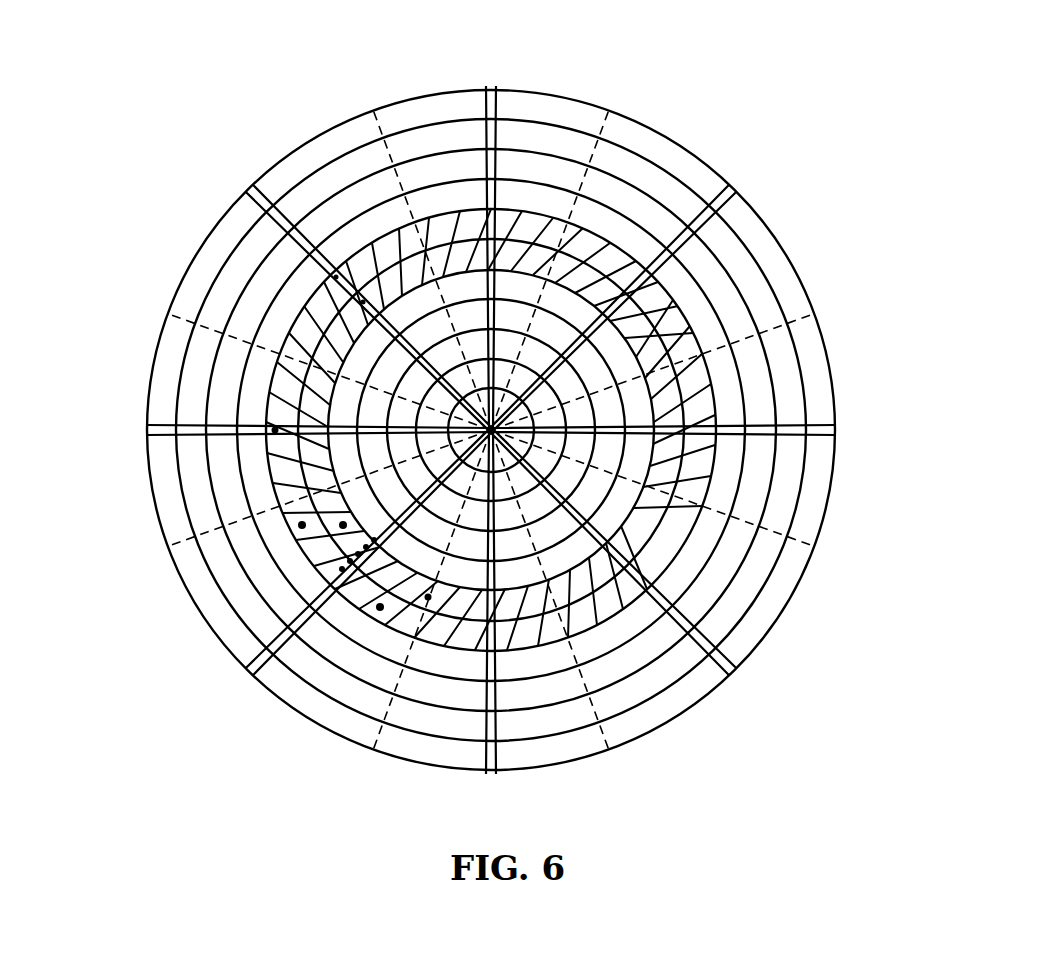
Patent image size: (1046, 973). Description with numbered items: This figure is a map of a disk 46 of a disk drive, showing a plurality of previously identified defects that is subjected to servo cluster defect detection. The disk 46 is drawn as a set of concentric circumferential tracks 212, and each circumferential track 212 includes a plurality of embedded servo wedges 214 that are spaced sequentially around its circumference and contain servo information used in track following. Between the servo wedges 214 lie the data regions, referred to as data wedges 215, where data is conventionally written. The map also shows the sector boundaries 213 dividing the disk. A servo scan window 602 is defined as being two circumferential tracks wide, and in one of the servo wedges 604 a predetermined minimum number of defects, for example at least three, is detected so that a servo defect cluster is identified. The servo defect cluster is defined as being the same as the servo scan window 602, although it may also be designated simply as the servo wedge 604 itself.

The disk 46 is at (270, 58).
The circumferential track 212 is at (200, 300).
The dashed radial sector lines 213 is at (587, 140).
The servo wedge 214 is at (488, 97).
The data wedge 215 is at (435, 100).
The servo scan window 602 is at (608, 226).
The servo wedge 604 is at (331, 564).